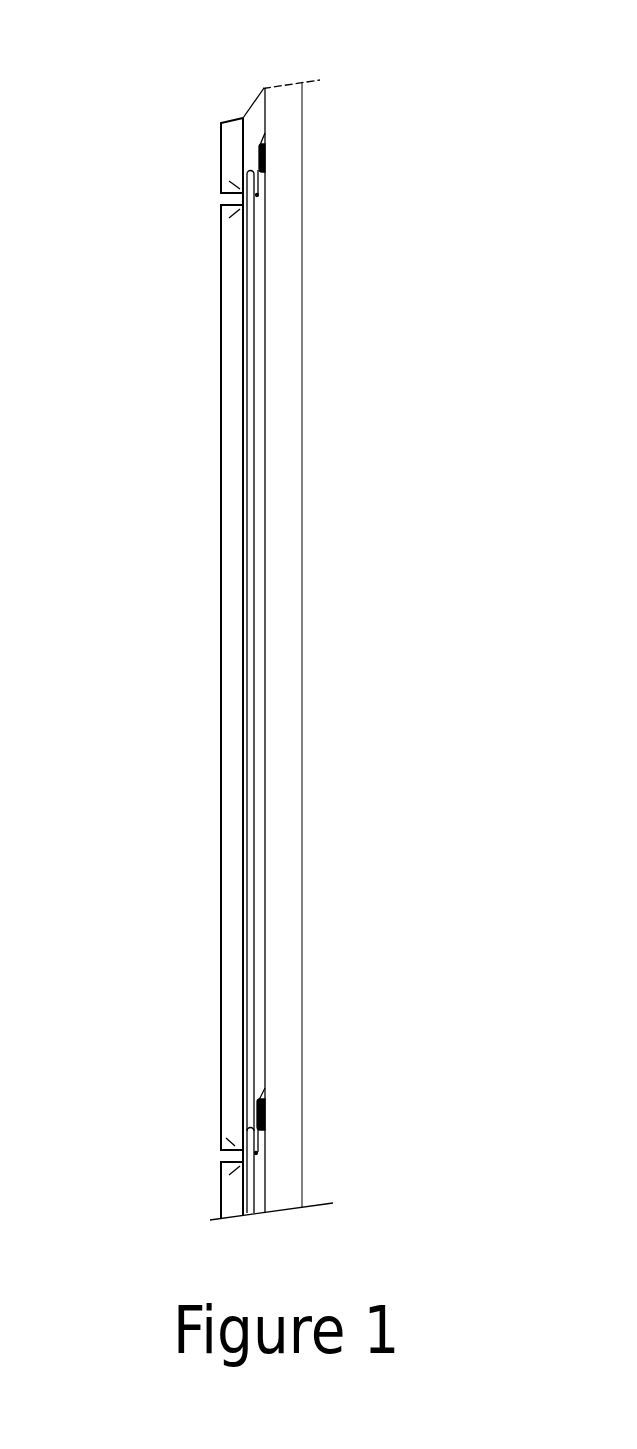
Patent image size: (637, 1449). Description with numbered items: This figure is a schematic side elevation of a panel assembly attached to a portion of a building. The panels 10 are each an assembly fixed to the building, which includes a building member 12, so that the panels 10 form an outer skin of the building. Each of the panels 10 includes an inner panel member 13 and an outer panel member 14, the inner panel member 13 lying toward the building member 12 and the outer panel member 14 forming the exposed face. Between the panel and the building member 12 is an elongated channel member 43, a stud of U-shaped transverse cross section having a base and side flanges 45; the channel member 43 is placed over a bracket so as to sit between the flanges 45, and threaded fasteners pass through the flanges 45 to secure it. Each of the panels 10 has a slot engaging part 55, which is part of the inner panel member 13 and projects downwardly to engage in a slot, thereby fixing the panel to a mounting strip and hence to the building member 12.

The panel 10 is at (208, 141).
The building member 12 is at (322, 349).
The inner panel member 13 is at (263, 733).
The outer panel member 14 is at (203, 671).
The channel member 43 is at (370, 500).
The flanges 45 is at (381, 600).
The slot engaging part 55 is at (250, 93).